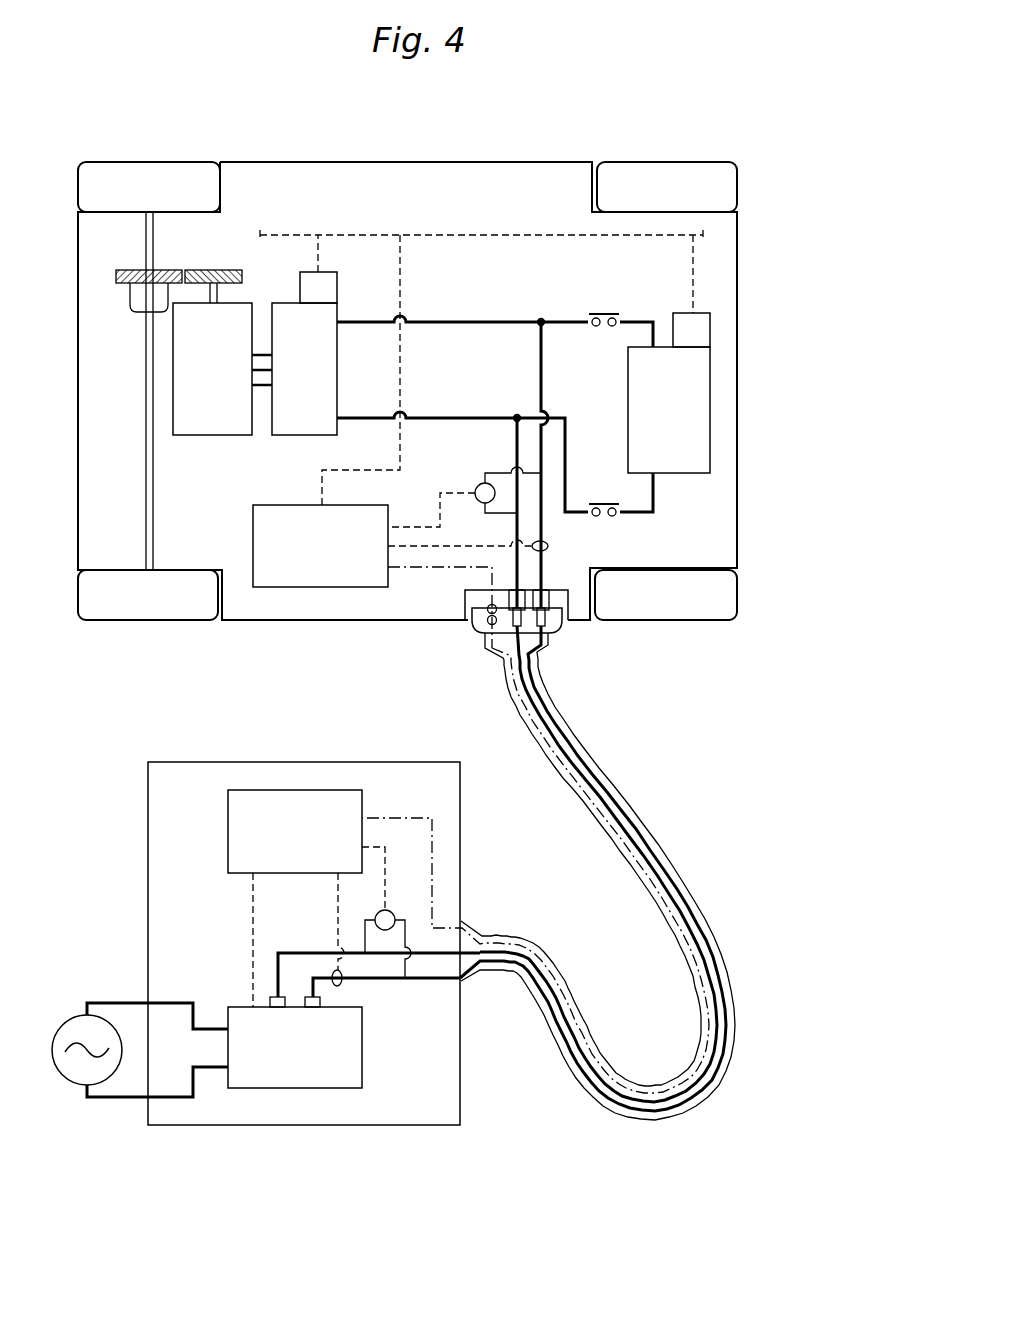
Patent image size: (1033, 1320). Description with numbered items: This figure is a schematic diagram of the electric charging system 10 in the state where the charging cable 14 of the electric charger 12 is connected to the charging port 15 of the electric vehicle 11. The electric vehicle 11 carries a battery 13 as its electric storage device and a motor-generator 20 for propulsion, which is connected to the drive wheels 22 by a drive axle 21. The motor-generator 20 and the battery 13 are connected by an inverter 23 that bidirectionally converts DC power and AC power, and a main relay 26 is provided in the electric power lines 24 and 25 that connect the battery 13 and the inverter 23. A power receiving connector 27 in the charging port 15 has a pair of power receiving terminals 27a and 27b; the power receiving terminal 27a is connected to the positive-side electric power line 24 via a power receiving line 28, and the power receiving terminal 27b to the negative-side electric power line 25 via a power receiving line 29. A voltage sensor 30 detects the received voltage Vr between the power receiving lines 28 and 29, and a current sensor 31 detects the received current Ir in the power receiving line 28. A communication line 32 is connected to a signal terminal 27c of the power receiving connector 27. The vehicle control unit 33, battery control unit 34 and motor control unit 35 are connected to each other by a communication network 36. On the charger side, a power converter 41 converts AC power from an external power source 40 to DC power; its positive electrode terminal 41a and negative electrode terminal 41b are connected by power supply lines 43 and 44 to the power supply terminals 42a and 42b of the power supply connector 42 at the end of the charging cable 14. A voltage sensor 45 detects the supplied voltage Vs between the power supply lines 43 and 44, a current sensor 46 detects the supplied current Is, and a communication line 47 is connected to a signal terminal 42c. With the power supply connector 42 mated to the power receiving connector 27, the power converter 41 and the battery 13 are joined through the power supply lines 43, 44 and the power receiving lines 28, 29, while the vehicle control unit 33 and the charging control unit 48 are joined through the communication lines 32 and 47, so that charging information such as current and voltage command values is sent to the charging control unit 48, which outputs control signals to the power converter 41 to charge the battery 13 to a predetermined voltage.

The electric charging system 10 is at (652, 127).
The electric vehicle 11 is at (549, 159).
The electric charger 12 is at (150, 758).
The battery 13 is at (685, 475).
The charging cable 14 is at (612, 769).
The charging port 15 is at (463, 644).
The motor-generator 20 is at (200, 436).
The drive axle 21 is at (146, 358).
The drive wheels 22 is at (148, 160).
The inverter 23 is at (290, 436).
The electric power line 24 is at (497, 321).
The electric power line 25 is at (482, 417).
The main relay 26 is at (603, 313).
The power receiving connector 27 is at (571, 604).
The power receiving terminal 27a is at (562, 598).
The power receiving terminal 27b is at (489, 611).
The signal terminal 27c is at (484, 609).
The power receiving line 28 is at (543, 365).
The power receiving line 29 is at (516, 443).
The voltage sensor 30 is at (477, 485).
The current sensor 31 is at (548, 546).
The communication line 32 is at (405, 568).
The vehicle control unit 33 is at (253, 538).
The battery control unit 34 is at (682, 312).
The motor control unit 35 is at (337, 285).
The communication network 36 is at (527, 235).
The external power source 40 is at (72, 1021).
The power converter 41 is at (362, 1070).
The positive electrode terminal 41a is at (311, 996).
The negative electrode terminal 41b is at (277, 996).
The power supply connector 42 is at (563, 631).
The power supply terminal 42a is at (545, 631).
The power supply terminal 42b is at (517, 634).
The signal terminal 42c is at (490, 635).
The power supply line 43 is at (639, 801).
The power supply line 44 is at (649, 847).
The voltage sensor 45 is at (393, 912).
The current sensor 46 is at (341, 985).
The communication line 47 is at (680, 895).
The charging control unit 48 is at (335, 790).